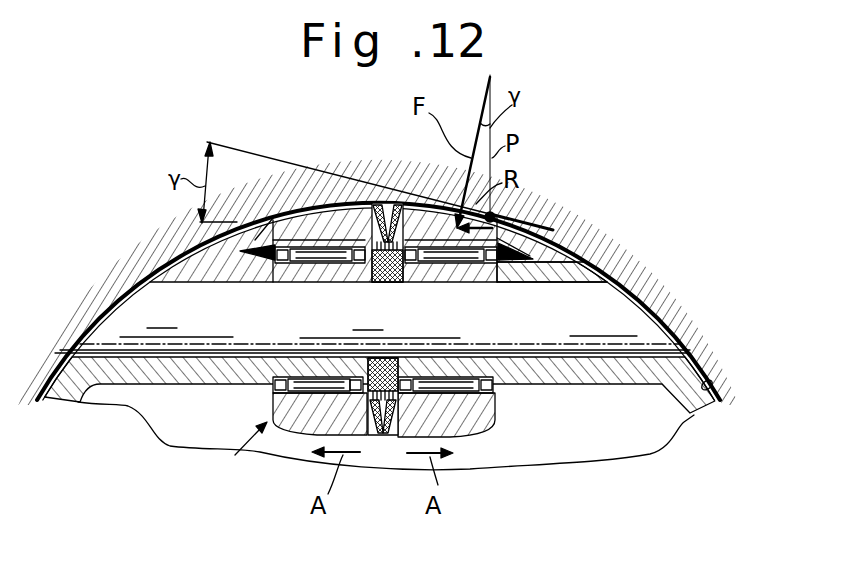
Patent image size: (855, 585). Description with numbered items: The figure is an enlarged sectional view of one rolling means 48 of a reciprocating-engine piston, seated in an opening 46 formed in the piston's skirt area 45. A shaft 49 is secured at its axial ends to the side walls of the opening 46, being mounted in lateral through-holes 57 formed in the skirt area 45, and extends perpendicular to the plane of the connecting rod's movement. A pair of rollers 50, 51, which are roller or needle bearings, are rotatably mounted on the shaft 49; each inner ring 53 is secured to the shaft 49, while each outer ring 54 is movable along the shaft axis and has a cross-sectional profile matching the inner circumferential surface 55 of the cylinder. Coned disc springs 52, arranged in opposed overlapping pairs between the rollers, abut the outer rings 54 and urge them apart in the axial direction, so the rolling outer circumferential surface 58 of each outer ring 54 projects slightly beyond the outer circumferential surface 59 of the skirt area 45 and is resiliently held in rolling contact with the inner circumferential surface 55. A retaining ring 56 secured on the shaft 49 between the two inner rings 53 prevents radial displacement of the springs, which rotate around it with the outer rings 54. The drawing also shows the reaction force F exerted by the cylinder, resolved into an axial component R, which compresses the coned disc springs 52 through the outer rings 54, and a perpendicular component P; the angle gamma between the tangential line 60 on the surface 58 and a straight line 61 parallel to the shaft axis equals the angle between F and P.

The skirt area 45 is at (162, 376).
The openings 46 is at (550, 232).
The rolling means 48 is at (238, 452).
The shaft 49 is at (640, 323).
The roller 50 is at (312, 206).
The roller 51 is at (424, 193).
The coned disc springs 52 is at (381, 436).
The inner rings 53 is at (295, 372).
The outer rings 54 is at (305, 423).
The inner circumferential surface 55 is at (713, 381).
The ring 56 is at (383, 282).
The lateral through-holes 57 is at (641, 290).
The outer circumferential surface 58 is at (290, 436).
The outer circumferential surface 59 is at (600, 257).
The tangential line 60 is at (234, 148).
The straight line 61 is at (224, 221).